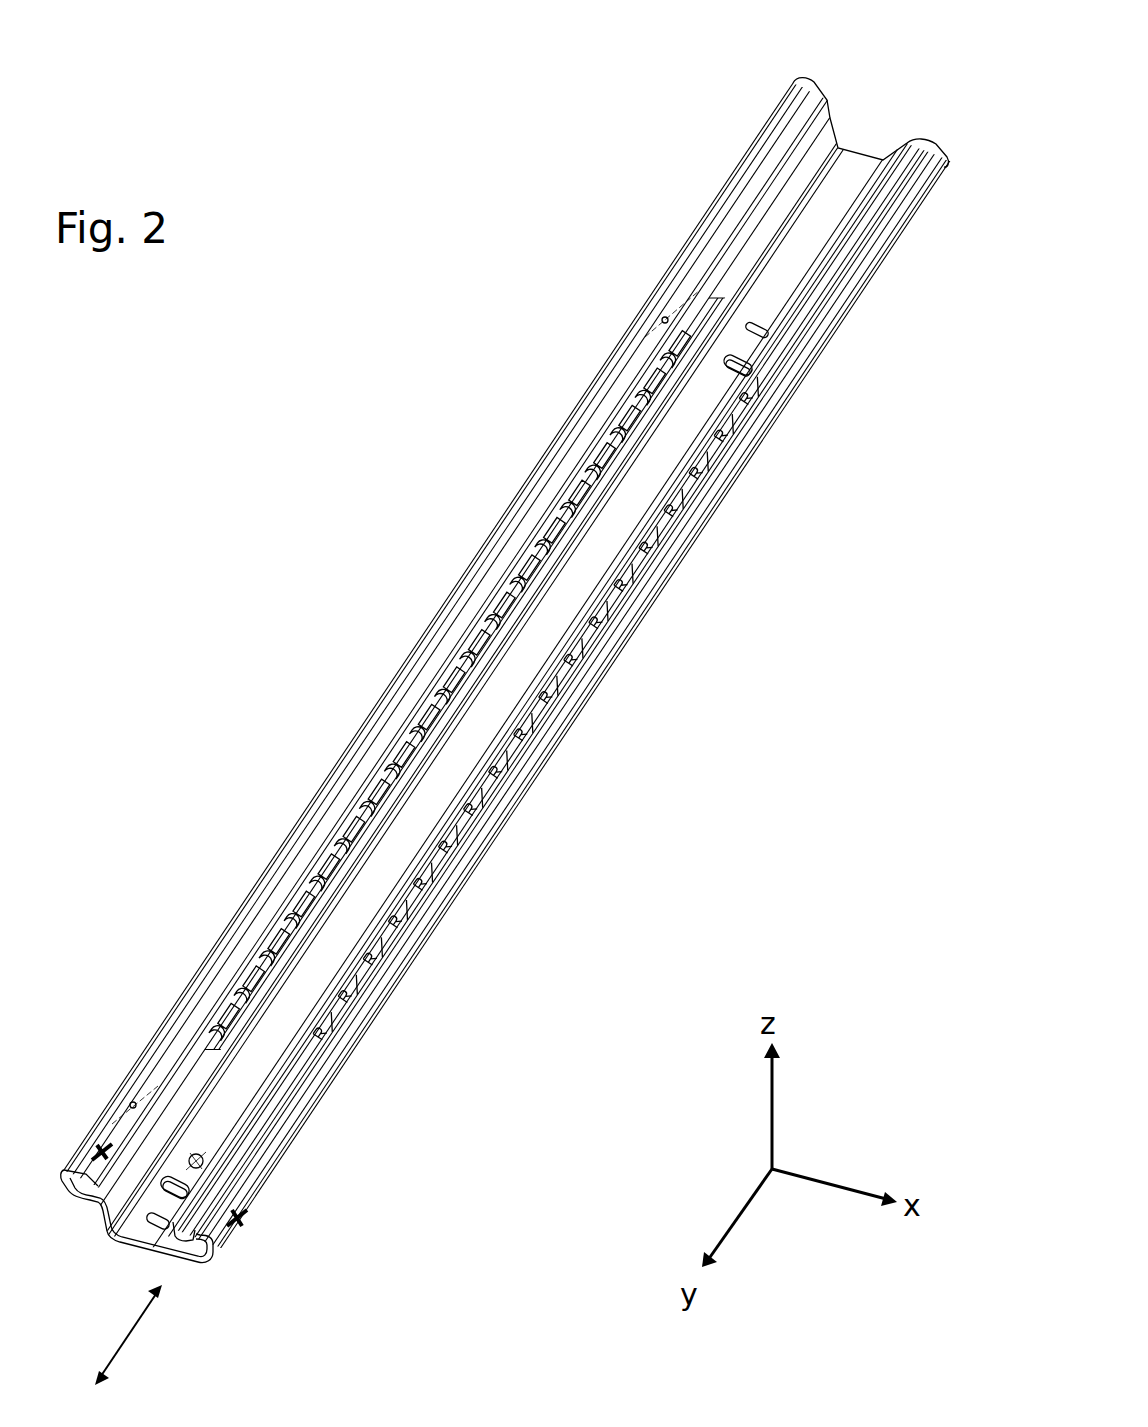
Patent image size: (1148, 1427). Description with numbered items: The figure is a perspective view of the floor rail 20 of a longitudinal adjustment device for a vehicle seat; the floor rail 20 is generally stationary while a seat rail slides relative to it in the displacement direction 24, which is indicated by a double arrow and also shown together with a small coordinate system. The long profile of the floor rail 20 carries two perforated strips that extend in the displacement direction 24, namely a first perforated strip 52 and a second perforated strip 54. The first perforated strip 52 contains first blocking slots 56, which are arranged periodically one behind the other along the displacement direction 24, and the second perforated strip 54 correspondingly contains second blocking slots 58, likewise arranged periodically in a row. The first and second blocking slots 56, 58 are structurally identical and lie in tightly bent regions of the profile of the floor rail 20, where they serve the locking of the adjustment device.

The floor rail 20 is at (340, 727).
The displacement direction 24 is at (138, 1322).
The first perforated strip 52 is at (833, 118).
The second perforated strip 54 is at (250, 1128).
The first blocking slots 56 is at (535, 560).
The second blocking slots 58 is at (430, 860).